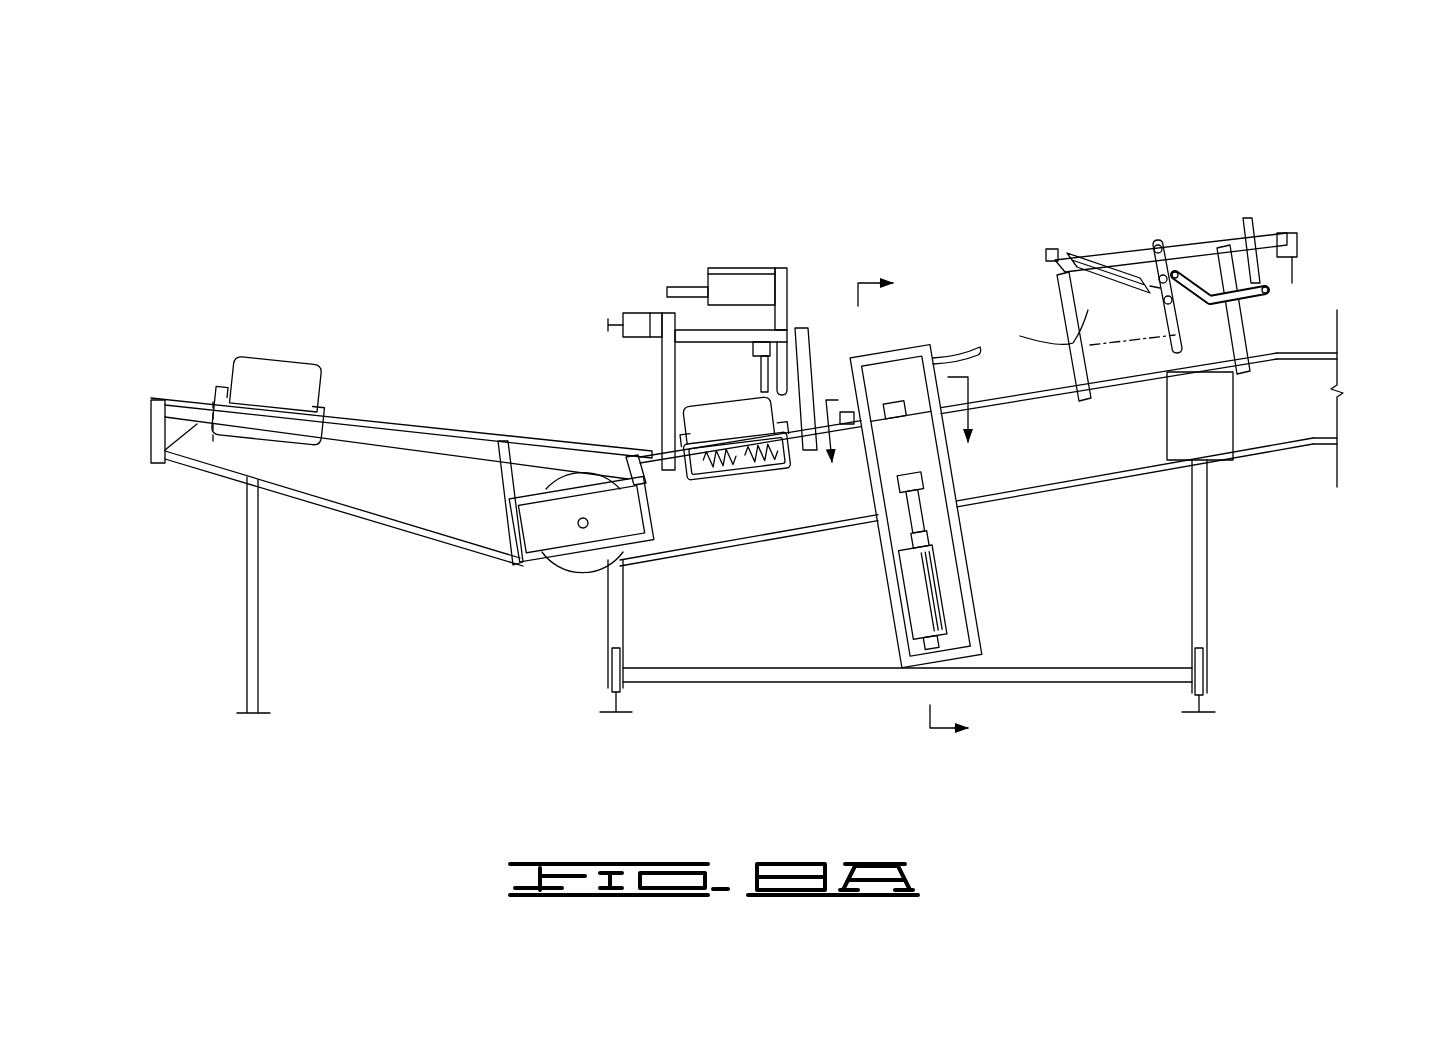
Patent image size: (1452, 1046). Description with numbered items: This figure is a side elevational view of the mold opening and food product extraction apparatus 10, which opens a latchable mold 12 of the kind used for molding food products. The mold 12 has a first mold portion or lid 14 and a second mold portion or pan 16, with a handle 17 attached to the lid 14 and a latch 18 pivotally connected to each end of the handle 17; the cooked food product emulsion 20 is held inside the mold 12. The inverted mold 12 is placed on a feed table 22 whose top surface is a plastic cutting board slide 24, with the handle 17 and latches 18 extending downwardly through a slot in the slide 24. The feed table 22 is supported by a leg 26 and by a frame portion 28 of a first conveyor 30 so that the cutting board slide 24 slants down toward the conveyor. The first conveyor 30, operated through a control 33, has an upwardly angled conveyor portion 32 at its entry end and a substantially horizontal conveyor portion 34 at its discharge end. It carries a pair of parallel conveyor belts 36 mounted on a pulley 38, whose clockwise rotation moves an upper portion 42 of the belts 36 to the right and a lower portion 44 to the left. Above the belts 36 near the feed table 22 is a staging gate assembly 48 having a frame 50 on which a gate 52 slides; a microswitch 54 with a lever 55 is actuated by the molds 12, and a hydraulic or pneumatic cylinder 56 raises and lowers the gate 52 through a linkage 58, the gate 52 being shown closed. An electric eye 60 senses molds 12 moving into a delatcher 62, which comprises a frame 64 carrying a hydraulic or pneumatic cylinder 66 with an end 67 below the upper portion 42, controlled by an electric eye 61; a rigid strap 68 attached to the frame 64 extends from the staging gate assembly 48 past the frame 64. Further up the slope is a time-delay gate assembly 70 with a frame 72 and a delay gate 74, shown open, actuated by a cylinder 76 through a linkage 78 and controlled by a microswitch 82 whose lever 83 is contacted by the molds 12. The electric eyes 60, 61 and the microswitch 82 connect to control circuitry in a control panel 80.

The mold opening and food product extraction apparatus 10 is at (626, 176).
The latchable mold 12 is at (230, 352).
The first mold portion (lid) 14 is at (197, 470).
The second mold portion (pan) 16 is at (279, 355).
The handle 17 is at (265, 432).
The latch 18 is at (321, 400).
The food product emulsion 20 is at (300, 385).
The feed table 22 is at (396, 442).
The cutting board slide 24 is at (449, 430).
The leg 26 is at (247, 648).
The frame portion 28 is at (608, 630).
The first conveyor 30 is at (932, 496).
The upwardly angled conveyor portion 32 is at (741, 549).
The control 33 is at (630, 312).
The horizontal conveyor portion 34 is at (1306, 340).
The conveyor belts 36 is at (633, 507).
The pulley 38 is at (548, 530).
The upper portion of belts 42 is at (690, 432).
The lower portion of belts 44 is at (665, 548).
The staging gate assembly 48 is at (664, 308).
The frame 50 is at (661, 372).
The gate 52 is at (787, 365).
The microswitch 54 is at (760, 342).
The lever 55 is at (760, 380).
The hydraulic or pneumatic cylinder 56 is at (688, 287).
The linkage 58 is at (781, 300).
The electric eye 60 is at (866, 440).
The electric eye 61 is at (896, 396).
The delatcher 62 is at (888, 620).
The frame 64 is at (986, 650).
The hydraulic or pneumatic cylinder 66 is at (946, 600).
The end of cylinder 67 is at (930, 500).
The rigid mold support (strap) 68 is at (961, 350).
The time-delay gate assembly 70 is at (1181, 244).
The frame 72 is at (1026, 368).
The delay gate 74 is at (1070, 342).
The hydraulic or pneumatic cylinder 76 is at (1090, 255).
The linkage 78 is at (1202, 262).
The control panel 80 is at (1221, 436).
The microswitch 82 is at (1288, 232).
The lever 83 is at (1298, 250).